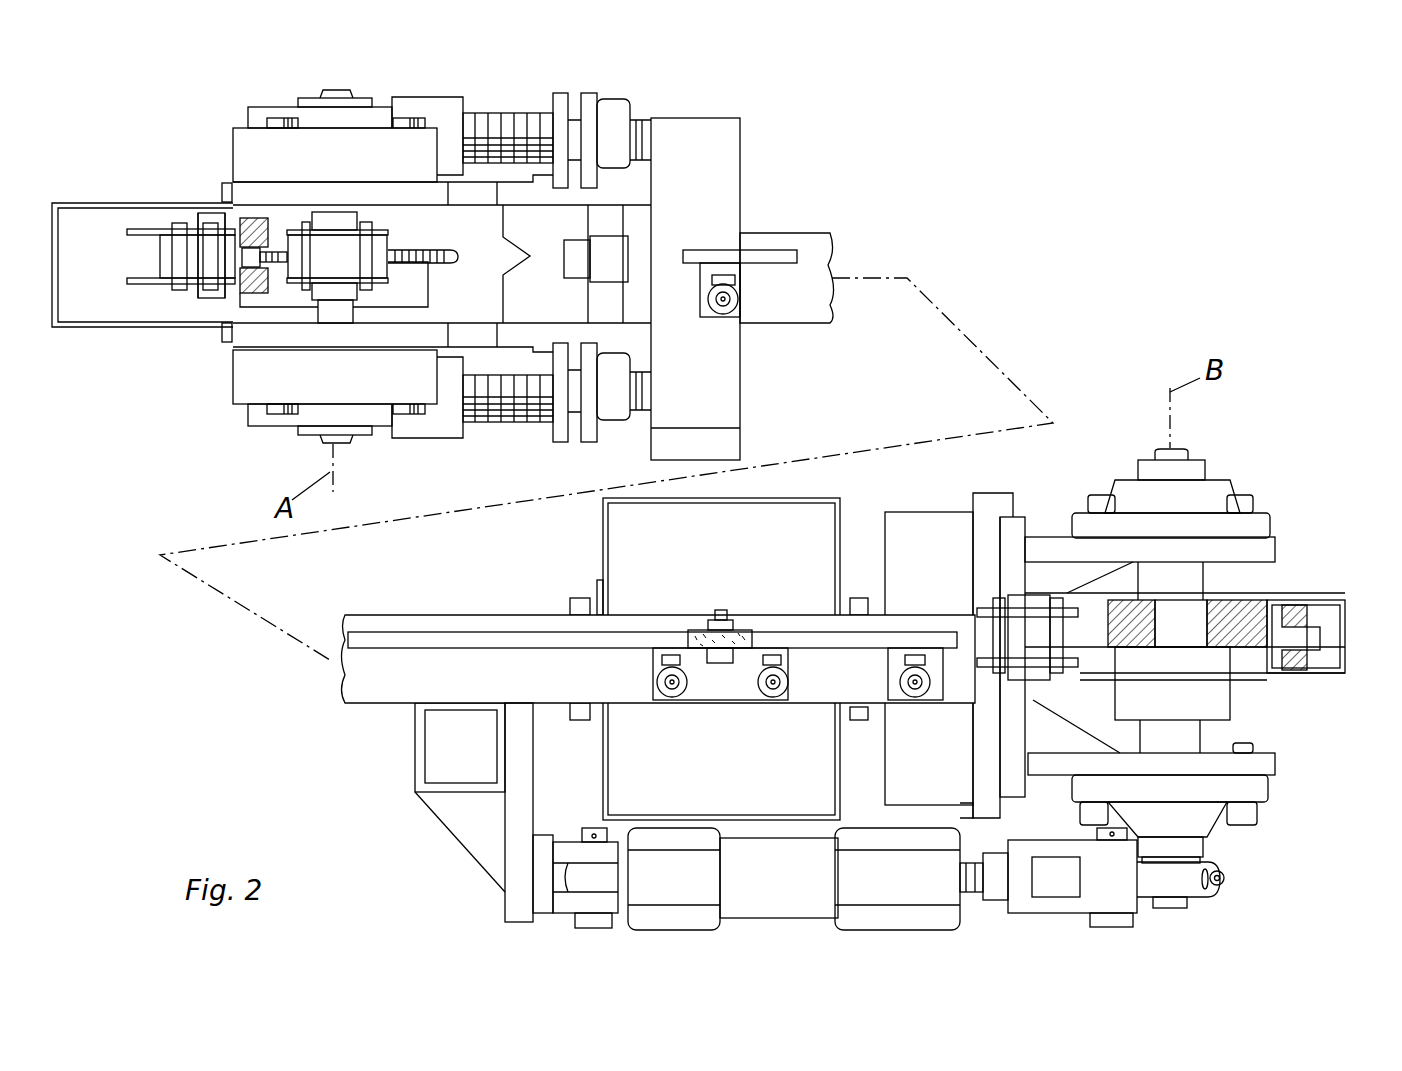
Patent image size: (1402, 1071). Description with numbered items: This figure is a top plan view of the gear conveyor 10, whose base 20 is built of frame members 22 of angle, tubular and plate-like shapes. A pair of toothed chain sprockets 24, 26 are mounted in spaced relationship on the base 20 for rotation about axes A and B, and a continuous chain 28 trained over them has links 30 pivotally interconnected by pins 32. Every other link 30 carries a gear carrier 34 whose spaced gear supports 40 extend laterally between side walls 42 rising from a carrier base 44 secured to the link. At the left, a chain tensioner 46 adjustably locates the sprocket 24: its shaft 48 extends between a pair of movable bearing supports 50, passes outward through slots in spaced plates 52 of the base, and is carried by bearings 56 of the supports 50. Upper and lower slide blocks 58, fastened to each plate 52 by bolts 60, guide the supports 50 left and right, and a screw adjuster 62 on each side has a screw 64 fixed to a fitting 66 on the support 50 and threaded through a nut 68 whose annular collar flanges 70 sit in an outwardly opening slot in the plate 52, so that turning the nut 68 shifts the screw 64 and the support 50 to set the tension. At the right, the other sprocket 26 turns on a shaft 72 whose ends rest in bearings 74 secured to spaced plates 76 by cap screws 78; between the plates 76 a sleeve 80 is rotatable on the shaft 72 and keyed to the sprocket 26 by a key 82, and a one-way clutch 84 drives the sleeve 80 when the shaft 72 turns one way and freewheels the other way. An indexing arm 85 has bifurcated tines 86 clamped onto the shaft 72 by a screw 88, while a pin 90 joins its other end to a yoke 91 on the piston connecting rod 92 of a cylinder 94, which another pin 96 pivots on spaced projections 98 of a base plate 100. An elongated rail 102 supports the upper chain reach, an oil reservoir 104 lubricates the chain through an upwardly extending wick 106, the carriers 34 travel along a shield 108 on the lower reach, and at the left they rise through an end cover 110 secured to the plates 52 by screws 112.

The conveyor 10 is at (1120, 312).
The base 20 is at (778, 232).
The frame members 22 is at (840, 252).
The chain sprocket 24 is at (430, 258).
The chain sprocket 26 is at (1262, 660).
The chain 28 is at (256, 300).
The chain links 30 is at (286, 236).
The pins 32 is at (250, 225).
The gear carrier 34 is at (148, 292).
The gear supports 40 is at (205, 222).
The side walls 42 is at (130, 280).
The carrier base 44 is at (212, 284).
The chain tensioner 46 is at (640, 118).
The shaft 48 is at (330, 312).
The bearing supports 50 is at (270, 107).
The plates 52 is at (398, 196).
The bearings 56 is at (336, 98).
The slide blocks 58 is at (245, 135).
The bolts 60 is at (262, 112).
The screw adjuster 62 is at (503, 138).
The screw 64 is at (505, 128).
The fitting 66 is at (448, 100).
The nut 68 is at (615, 105).
The collar flanges 70 is at (590, 93).
The shaft 72 is at (576, 190).
The bearings 74 is at (1212, 490).
The plates 76 is at (1265, 548).
The cap screws 78 is at (1095, 500).
The sleeve 80 is at (1195, 626).
The key 82 is at (1135, 610).
The one-way clutch 84 is at (1215, 690).
The indexing arm 85 is at (1135, 882).
The tines 86 is at (1202, 894).
The screw 88 is at (1226, 878).
The pin 90 is at (1112, 926).
The yoke 91 is at (1020, 882).
The piston connecting rod 92 is at (966, 895).
The cylinder 94 is at (740, 895).
The pin 96 is at (592, 928).
The projections 98 is at (605, 900).
The plate 100 is at (505, 910).
The rail 102 is at (775, 264).
The oil reservoir 104 is at (838, 516).
The wick 106 is at (700, 630).
The shield 108 is at (1302, 672).
The end cover 110 is at (98, 330).
The screws 112 is at (222, 190).